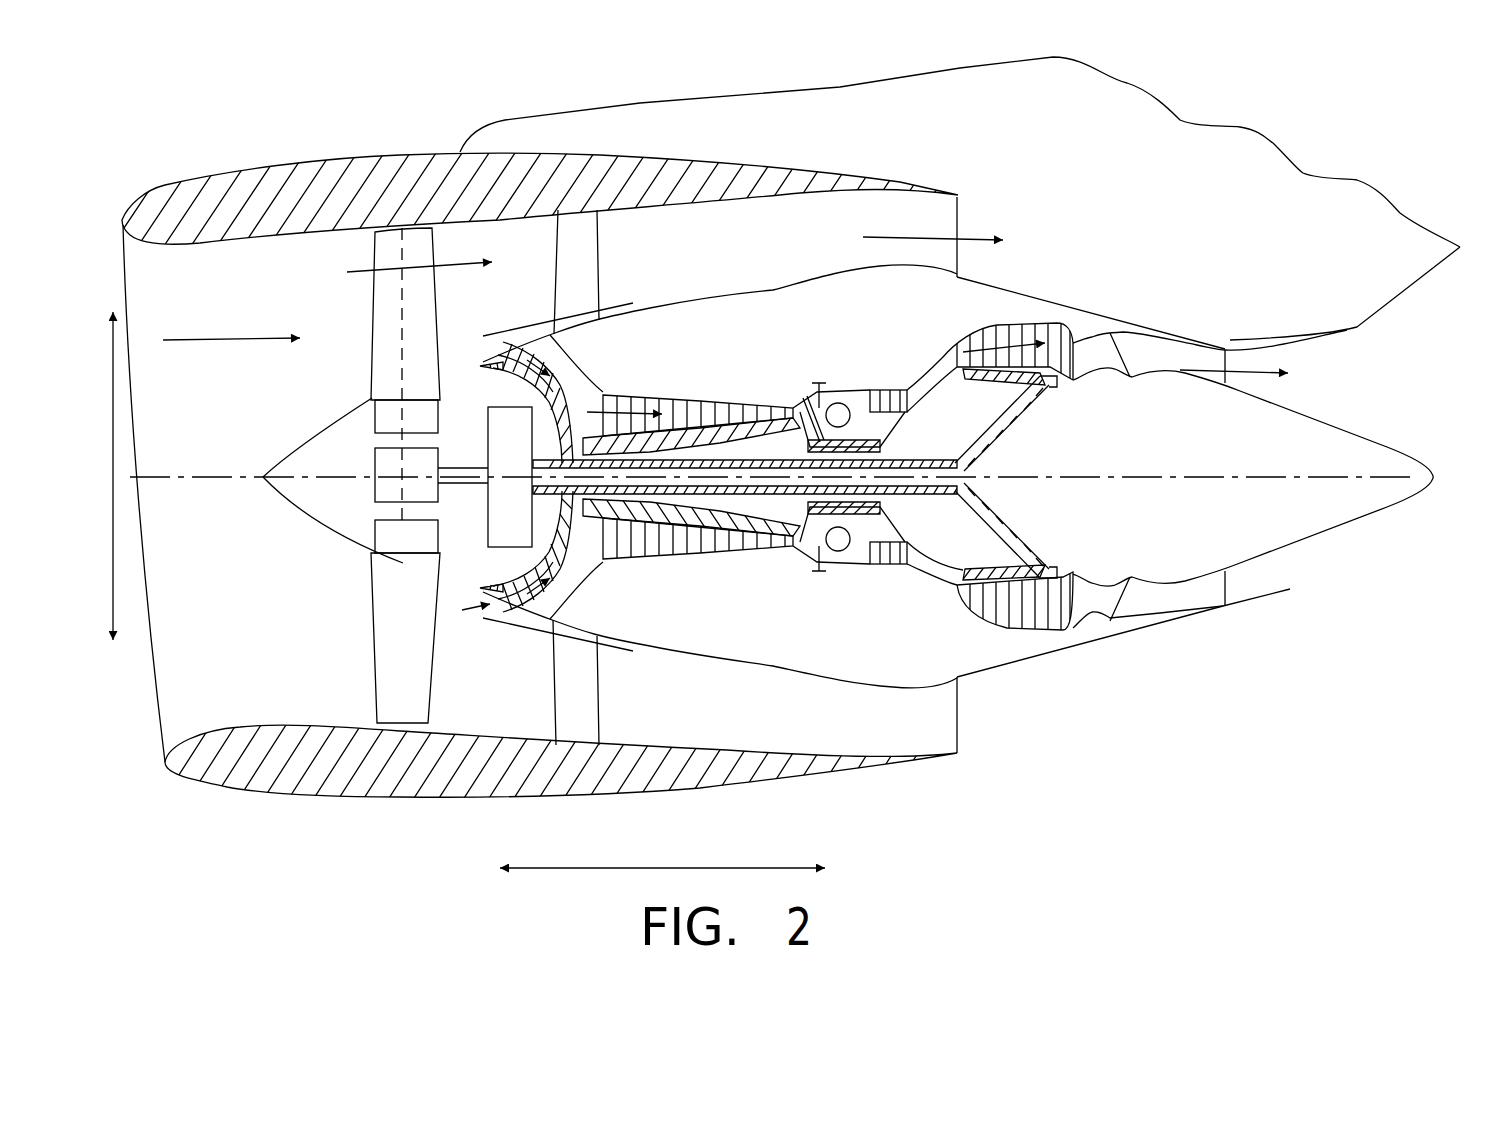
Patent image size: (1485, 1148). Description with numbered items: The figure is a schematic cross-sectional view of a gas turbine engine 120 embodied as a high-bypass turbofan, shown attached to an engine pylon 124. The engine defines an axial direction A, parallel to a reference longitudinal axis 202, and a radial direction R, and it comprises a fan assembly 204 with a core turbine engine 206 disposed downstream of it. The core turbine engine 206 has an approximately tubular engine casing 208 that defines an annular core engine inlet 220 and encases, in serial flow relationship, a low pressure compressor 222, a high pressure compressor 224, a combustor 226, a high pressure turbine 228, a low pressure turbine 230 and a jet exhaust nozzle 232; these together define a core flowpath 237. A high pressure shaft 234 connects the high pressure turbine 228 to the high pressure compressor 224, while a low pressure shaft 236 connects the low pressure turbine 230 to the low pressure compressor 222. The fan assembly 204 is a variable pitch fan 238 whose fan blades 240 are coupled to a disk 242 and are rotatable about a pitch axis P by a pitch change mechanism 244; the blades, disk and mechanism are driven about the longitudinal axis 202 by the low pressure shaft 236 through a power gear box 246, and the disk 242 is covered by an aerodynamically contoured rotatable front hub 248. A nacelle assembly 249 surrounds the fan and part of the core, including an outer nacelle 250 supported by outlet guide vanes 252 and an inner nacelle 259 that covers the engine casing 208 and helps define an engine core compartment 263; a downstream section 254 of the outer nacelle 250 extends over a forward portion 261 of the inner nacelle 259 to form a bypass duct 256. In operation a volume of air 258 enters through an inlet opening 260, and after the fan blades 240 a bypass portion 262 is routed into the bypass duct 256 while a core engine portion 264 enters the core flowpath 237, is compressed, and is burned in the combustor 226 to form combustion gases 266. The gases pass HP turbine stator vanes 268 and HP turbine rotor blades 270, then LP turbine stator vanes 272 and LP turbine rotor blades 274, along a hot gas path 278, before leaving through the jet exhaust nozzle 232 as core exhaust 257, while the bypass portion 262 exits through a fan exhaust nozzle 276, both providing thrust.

The gas turbine engine 120 is at (1130, 195).
The engine pylon 124 is at (1297, 185).
The longitudinal axis 202 is at (1157, 473).
The fan assembly 204 is at (272, 262).
The core turbine engine 206 is at (752, 320).
The engine casing 208 is at (632, 393).
The core engine inlet 220 is at (462, 610).
The low pressure compressor 222 is at (541, 610).
The high pressure compressor 224 is at (637, 550).
The combustor 226 is at (836, 560).
The high pressure turbine 228 is at (912, 557).
The low pressure turbine 230 is at (1062, 630).
The jet exhaust nozzle 232 is at (1127, 610).
The high pressure shaft 234 is at (873, 444).
The low pressure shaft 236 is at (960, 458).
The core flowpath 237 is at (573, 577).
The variable pitch fan 238 is at (323, 533).
The fan blades 240 is at (372, 653).
The disk 242 is at (387, 410).
The pitch change mechanism 244 is at (373, 466).
The power gear box 246 is at (518, 412).
The rotatable front hub 248 is at (280, 493).
The nacelle assembly 249 is at (957, 777).
The outer nacelle 250 is at (422, 800).
The outlet guide vanes 252 is at (599, 260).
The downstream section 254 is at (848, 178).
The bypass duct 256 is at (760, 252).
The core exhaust 257 is at (1243, 368).
The volume of air 258 is at (227, 338).
The inner nacelle 259 is at (790, 672).
The inlet opening 260 is at (162, 760).
The forward portion 261 is at (542, 315).
The bypass portion 262 is at (387, 277).
The engine core compartment 263 is at (810, 331).
The core engine portion 264 is at (468, 337).
The combustion gases 266 is at (1012, 323).
The HP turbine stator vanes 268 is at (853, 552).
The HP turbine rotor blades 270 is at (873, 537).
The LP turbine stator vanes 272 is at (967, 615).
The LP turbine rotor blades 274 is at (977, 627).
The fan exhaust nozzle 276 is at (960, 217).
The hot gas path 278 is at (937, 347).
The axial direction A is at (664, 868).
The radial direction R is at (113, 452).
The pitch axis P is at (413, 245).